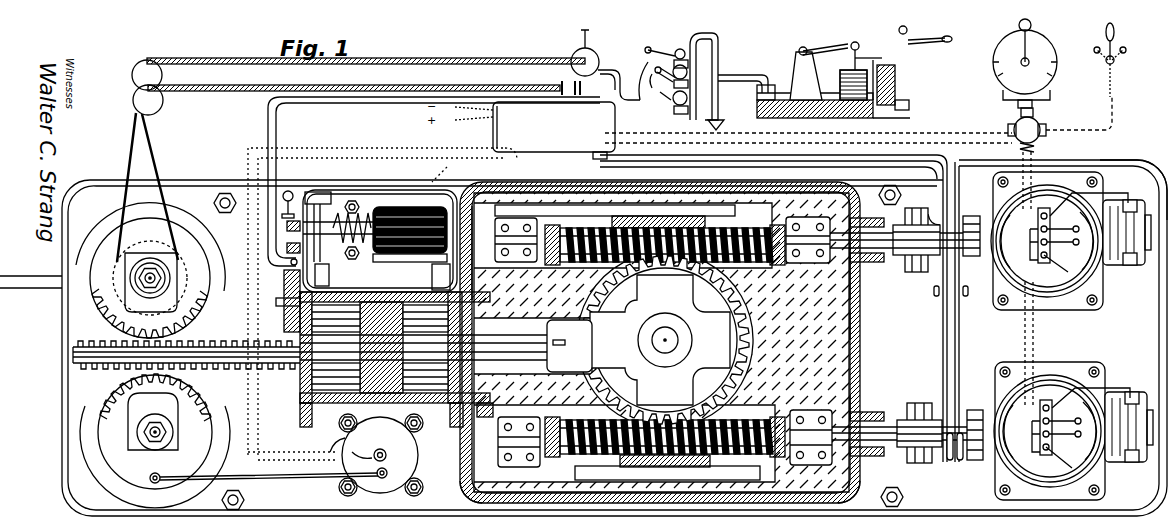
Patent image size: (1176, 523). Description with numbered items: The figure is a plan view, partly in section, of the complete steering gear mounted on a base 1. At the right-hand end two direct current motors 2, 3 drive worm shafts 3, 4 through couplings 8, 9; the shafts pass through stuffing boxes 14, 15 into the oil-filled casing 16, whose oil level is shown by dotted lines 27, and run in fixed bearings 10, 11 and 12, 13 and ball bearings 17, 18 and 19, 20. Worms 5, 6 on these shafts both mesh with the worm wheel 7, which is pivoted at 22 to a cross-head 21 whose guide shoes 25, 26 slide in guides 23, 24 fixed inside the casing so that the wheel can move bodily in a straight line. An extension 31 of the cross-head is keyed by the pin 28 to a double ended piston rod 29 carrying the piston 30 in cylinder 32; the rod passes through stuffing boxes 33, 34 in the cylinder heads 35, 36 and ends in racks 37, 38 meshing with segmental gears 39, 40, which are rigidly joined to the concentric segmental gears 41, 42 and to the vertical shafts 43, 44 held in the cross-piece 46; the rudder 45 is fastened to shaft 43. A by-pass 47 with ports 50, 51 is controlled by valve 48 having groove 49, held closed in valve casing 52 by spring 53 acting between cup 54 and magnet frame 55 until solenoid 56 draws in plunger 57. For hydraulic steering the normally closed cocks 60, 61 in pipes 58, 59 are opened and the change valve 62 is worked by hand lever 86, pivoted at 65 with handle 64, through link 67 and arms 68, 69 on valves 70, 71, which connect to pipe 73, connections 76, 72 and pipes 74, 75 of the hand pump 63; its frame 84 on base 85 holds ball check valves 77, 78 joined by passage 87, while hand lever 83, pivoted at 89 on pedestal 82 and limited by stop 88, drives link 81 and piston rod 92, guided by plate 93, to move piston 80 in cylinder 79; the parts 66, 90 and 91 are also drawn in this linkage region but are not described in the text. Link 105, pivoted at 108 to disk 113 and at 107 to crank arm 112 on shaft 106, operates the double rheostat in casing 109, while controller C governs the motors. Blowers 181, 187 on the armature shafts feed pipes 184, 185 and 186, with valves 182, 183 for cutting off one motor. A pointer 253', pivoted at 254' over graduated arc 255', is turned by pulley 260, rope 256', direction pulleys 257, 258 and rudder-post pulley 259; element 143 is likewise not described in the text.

The base 1 is at (1122, 178).
The direct current motor 2 is at (1071, 241).
The direct current motor / worm shaft 3 is at (887, 262).
The worm shaft 4 is at (890, 425).
The worm 5 is at (690, 275).
The worm 6 is at (690, 410).
The worm wheel 7 is at (665, 340).
The coupling 8 is at (917, 272).
The coupling 9 is at (919, 404).
The fixed bearing 10 is at (830, 208).
The fixed bearing 11 is at (480, 214).
The fixed bearing 12 is at (852, 484).
The fixed bearing 13 is at (466, 490).
The stuffing box 14 is at (856, 222).
The stuffing box 15 is at (862, 402).
The casing 16 is at (852, 330).
The ball bearing 17 is at (798, 226).
The ball bearing 18 is at (552, 222).
The ball bearing 19 is at (778, 470).
The ball bearing 20 is at (540, 462).
The cross-head 21 is at (660, 340).
The pivot 22 is at (650, 341).
The guide 23 is at (575, 218).
The guide 24 is at (605, 476).
The guide shoe 25 is at (652, 222).
The guide shoe 26 is at (668, 474).
The oil level (dotted lines) 27 is at (858, 320).
The key (pin) 28 is at (566, 340).
The piston rod 29 is at (278, 362).
The piston 30 is at (384, 296).
The extension 31 is at (622, 366).
The cylinder 32 is at (350, 300).
The stuffing box 33 is at (442, 412).
The stuffing box 34 is at (283, 300).
The cylinder head 35 is at (428, 300).
The cylinder head 36 is at (288, 292).
The rack 37 is at (226, 340).
The rack 38 is at (212, 370).
The segmental gear 39 is at (212, 280).
The segmental gear 40 is at (222, 412).
The segmental gear 41 is at (90, 305).
The segmental gear 42 is at (82, 396).
The vertical shaft 43 is at (130, 270).
The shaft 44 is at (144, 434).
The rudder 45 is at (36, 285).
The cross-piece 46 is at (130, 296).
The by-pass 47 is at (384, 192).
The valve 48 is at (287, 225).
The circular groove 49 is at (287, 247).
The port 50 is at (436, 276).
The port 51 is at (331, 275).
The valve casing 52 is at (314, 192).
The spring 53 is at (345, 210).
The cup 54 is at (330, 190).
The magnet frame 55 is at (365, 212).
The magnet solenoid 56 is at (408, 206).
The plunger 57 is at (410, 257).
The pipe 58 is at (290, 130).
The pipe 59 is at (266, 118).
The valve (cock) 60 is at (283, 197).
The valve (cock) 61 is at (290, 262).
The change valve 62 is at (720, 64).
The pump 63 is at (800, 50).
The handle 64 is at (662, 98).
The pivot 65 is at (656, 70).
The link 66 is at (662, 52).
The link 67 is at (680, 50).
The arm 68 is at (688, 50).
The arm 69 is at (672, 108).
The valve 70 is at (690, 68).
The valve 71 is at (690, 98).
The connection 72 is at (688, 86).
The pipe 73 is at (718, 40).
The pipe 74 is at (688, 112).
The pipe 75 is at (740, 78).
The connection 76 is at (720, 118).
The ball check valve 77 is at (765, 96).
The ball check valve 78 is at (882, 88).
The vertical cylinder 79 is at (900, 70).
The piston 80 is at (840, 92).
The link 81 is at (846, 68).
The pedestal 82 is at (809, 76).
The hand lever 83 is at (826, 48).
The frame 84 is at (898, 100).
The base 85 is at (905, 113).
The hand lever 86 is at (663, 82).
The connecting passage 87 is at (795, 74).
The stop 88 is at (906, 31).
The pivot 89 is at (798, 54).
The pivot 90 is at (854, 52).
The rod 91 is at (856, 58).
The piston rod 92 is at (826, 72).
The plate 93 is at (888, 60).
The link 105 is at (304, 478).
The shaft 106 is at (386, 452).
The pivot 107 is at (388, 473).
The pivot 108 is at (160, 476).
The casing 109 is at (428, 455).
The crank arm 112 is at (351, 447).
The disk 113 is at (120, 470).
The base 143 is at (1100, 516).
The blower 181 is at (976, 216).
The valve 182 is at (965, 300).
The valve 183 is at (938, 296).
The pipe 184 is at (962, 348).
The pipe 185 is at (946, 350).
The pipe 186 is at (940, 164).
The blower 187 is at (980, 417).
The pointer 253' is at (597, 53).
The pivot 254' is at (556, 65).
The graduated arc 255' is at (364, 63).
The rope 256' is at (366, 49).
The direction pulley 257 is at (145, 70).
The direction pulley 258 is at (152, 100).
The rudder-post pulley 259 is at (180, 262).
The pointer pulley 260 is at (604, 64).
The controller C is at (554, 130).